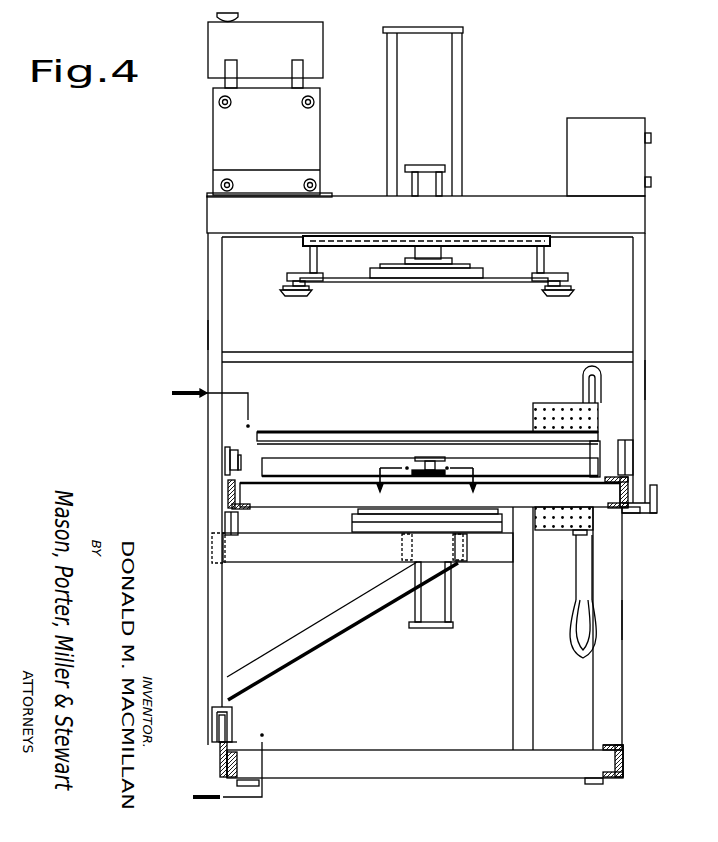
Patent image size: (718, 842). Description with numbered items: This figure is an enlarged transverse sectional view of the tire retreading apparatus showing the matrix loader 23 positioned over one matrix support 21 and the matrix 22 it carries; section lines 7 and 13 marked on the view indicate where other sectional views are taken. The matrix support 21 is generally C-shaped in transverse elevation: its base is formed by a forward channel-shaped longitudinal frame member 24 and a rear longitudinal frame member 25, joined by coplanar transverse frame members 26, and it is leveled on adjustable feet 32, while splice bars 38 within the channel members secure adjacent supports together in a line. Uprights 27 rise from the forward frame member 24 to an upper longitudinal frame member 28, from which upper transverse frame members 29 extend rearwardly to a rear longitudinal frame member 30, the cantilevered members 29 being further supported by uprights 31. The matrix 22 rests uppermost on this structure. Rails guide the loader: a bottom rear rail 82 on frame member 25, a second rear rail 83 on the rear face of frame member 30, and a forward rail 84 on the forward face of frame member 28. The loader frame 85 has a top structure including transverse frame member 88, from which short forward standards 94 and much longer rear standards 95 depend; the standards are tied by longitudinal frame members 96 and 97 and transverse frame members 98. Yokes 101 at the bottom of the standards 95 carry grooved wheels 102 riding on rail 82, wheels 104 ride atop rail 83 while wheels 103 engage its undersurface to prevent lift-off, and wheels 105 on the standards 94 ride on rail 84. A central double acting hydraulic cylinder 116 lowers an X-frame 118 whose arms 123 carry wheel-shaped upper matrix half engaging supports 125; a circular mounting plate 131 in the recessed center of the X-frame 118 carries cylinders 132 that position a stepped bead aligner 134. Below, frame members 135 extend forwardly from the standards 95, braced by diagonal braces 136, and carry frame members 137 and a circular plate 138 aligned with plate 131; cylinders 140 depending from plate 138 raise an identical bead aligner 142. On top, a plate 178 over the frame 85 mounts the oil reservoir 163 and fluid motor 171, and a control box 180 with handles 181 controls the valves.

The section line 7- 7 is at (207, 594).
The section line 13- 13 is at (426, 483).
The matrix support 21 is at (628, 613).
The matrix 22 is at (425, 432).
The matrix loader 23 is at (650, 214).
The forward longitudinal frame member 24 is at (625, 745).
The rear longitudinal frame member 25 is at (237, 740).
The transverse frame member 26 is at (385, 750).
The upright 27 is at (623, 580).
The upper longitudinal frame member 28 is at (612, 520).
The upper transverse frame member 29 is at (291, 478).
The rear longitudinal frame member 30 is at (248, 508).
The upright 31 is at (518, 626).
The foot 32 is at (259, 784).
The splice bar 38 is at (227, 768).
The bottom rear rail 82 is at (220, 758).
The second rear rail 83 is at (228, 492).
The forward rail 84 is at (630, 490).
The frame 85 is at (207, 288).
The transverse frame member 88 is at (512, 203).
The forward standard 94 is at (647, 385).
The rear standard 95 is at (208, 335).
The longitudinal frame member 96 is at (640, 512).
The longitudinal frame member 97 is at (215, 542).
The transverse frame member 98 is at (425, 350).
The yoke 101 is at (232, 718).
The wheel 102 is at (212, 718).
The rear wheel 103 is at (240, 525).
The wheel 104 is at (225, 455).
The wheel 105 is at (630, 440).
The hydraulic cylinder 116 is at (462, 128).
The X-frame 118 is at (505, 282).
The arm 123 is at (300, 270).
The upper matrix half engaging support 125 is at (291, 296).
The circular mounting plate 131 is at (470, 263).
The hydraulic cylinder 132 is at (428, 181).
The bead aligner 134 is at (432, 282).
The frame member 135 is at (312, 562).
The diagonal brace 136 is at (325, 645).
The frame member 137 is at (400, 545).
The circular plate 138 is at (468, 536).
The hydraulic cylinder 140 is at (442, 612).
The bead aligner 142 is at (425, 512).
The oil reservoir 163 is at (318, 52).
The fluid motor 171 is at (222, 142).
The plate 178 is at (270, 200).
The control box 180 is at (590, 133).
The handle 181 is at (652, 138).